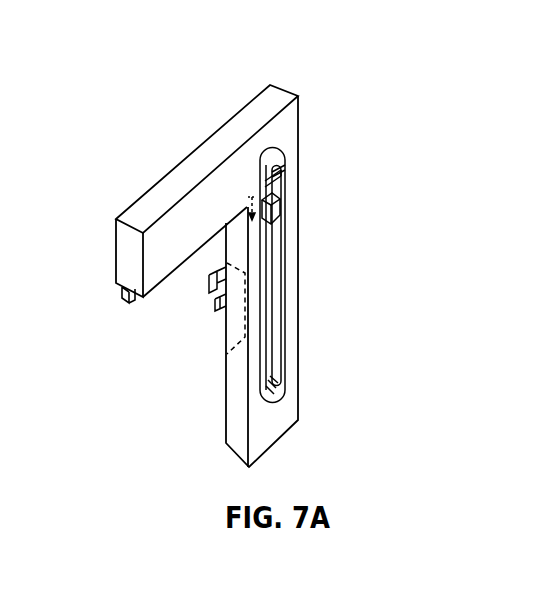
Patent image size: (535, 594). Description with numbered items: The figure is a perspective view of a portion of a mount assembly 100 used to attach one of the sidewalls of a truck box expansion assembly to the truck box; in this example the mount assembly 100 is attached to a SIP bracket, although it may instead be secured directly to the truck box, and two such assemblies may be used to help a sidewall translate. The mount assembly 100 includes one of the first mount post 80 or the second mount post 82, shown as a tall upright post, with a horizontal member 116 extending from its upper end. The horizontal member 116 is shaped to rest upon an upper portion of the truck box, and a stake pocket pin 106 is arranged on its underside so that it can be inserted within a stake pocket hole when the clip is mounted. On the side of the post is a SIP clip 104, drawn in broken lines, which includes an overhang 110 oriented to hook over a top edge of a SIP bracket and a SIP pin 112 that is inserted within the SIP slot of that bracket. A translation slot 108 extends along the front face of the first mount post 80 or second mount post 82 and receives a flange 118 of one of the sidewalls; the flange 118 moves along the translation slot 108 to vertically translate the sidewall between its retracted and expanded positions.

The mount assembly 100 is at (217, 251).
The horizontal member 116 is at (163, 178).
The stake pocket pin 106 is at (120, 291).
The first mount post 80 is at (316, 281).
The second mount post 82 is at (300, 253).
The translation slot 108 is at (275, 147).
The flange 118 is at (273, 193).
The SIP clip 104 is at (216, 356).
The overhang 110 is at (211, 293).
The SIP pin 112 is at (217, 310).